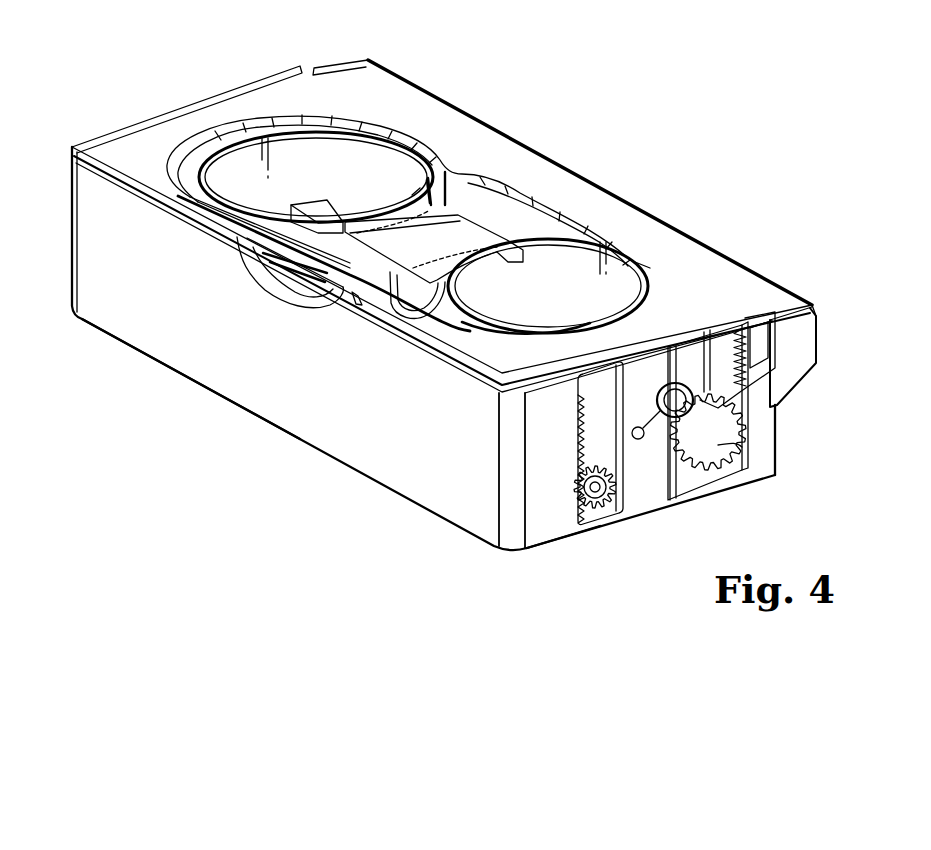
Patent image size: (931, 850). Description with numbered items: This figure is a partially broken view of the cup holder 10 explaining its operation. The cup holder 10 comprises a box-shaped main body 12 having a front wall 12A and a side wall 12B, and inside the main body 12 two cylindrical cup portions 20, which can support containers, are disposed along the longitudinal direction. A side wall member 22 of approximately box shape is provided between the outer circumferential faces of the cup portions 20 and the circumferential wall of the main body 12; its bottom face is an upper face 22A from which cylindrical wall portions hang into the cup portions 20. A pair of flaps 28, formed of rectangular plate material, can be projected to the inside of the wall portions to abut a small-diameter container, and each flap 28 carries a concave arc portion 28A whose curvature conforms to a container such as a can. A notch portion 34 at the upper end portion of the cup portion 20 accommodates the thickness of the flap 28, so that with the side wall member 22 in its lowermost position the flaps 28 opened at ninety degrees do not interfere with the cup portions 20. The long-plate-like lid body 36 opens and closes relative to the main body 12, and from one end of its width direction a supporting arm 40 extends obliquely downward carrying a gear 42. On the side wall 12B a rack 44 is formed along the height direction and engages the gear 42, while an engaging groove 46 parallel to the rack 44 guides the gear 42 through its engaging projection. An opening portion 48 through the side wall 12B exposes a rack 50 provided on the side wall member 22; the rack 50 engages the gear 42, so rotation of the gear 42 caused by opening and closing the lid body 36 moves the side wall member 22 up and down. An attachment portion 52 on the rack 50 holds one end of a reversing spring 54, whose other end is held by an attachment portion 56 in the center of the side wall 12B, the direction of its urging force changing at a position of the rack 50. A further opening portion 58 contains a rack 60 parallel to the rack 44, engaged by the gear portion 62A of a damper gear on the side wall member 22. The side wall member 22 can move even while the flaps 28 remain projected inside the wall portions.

The cup holder 10 is at (588, 60).
The main body 12 is at (403, 506).
The front wall 12A is at (355, 452).
The side wall 12B is at (543, 527).
The cup portion 20 is at (362, 157).
The side wall member 22 is at (290, 302).
The upper face 22A is at (356, 295).
The flap 28 is at (467, 232).
The concave arc portion 28A is at (433, 320).
The notch portion 34 is at (337, 218).
The lid body 36 is at (680, 228).
The supporting arm 40 is at (792, 368).
The gear 42 is at (743, 447).
The rack 44 is at (740, 330).
The engaging groove 46 is at (712, 343).
The opening portion 48 is at (672, 345).
The rack 50 is at (694, 492).
The attachment portion 52 is at (683, 490).
The reversing spring 54 is at (660, 392).
The attachment portion 56 is at (647, 440).
The opening portion 58 is at (608, 512).
The rack 60 is at (582, 432).
The gear portion 62A is at (583, 512).